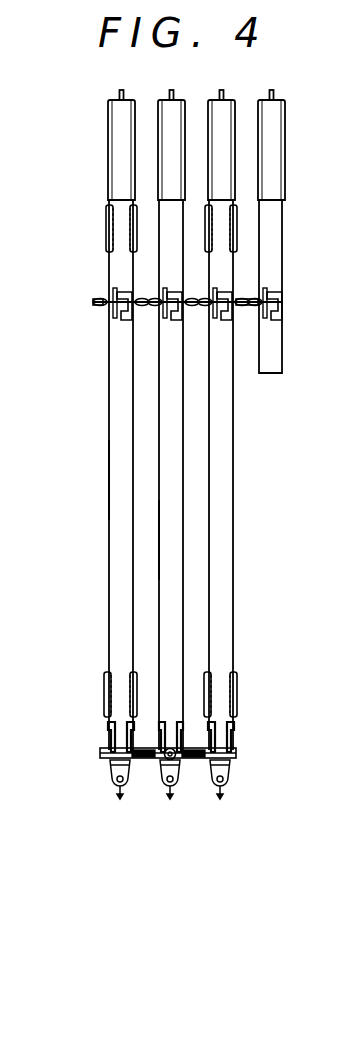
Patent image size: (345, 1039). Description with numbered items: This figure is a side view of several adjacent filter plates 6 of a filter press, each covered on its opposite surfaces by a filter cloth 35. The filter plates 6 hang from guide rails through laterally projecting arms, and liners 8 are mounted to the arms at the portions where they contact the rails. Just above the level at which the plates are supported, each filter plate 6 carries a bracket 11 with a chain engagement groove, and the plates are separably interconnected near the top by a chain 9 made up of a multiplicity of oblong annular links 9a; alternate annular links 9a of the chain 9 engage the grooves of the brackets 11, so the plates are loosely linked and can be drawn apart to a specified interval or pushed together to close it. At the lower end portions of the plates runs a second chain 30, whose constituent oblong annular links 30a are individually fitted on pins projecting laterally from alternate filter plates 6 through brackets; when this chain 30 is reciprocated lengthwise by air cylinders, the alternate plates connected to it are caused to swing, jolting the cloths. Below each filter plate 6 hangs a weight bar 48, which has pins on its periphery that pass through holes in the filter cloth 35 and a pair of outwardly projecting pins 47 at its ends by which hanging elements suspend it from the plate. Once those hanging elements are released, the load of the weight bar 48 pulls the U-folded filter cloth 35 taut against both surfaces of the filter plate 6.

The filter plate 6 is at (222, 474).
The chain 9 is at (96, 308).
The oblong annular link 9a is at (99, 298).
The bracket 11 is at (112, 316).
The liner 8 is at (120, 322).
The filter cloth 35 is at (134, 474).
The chain 30 is at (97, 757).
The oblong annular link 30a is at (193, 759).
The weight bar 48 is at (177, 787).
The outwardly projecting pin 47 is at (125, 787).